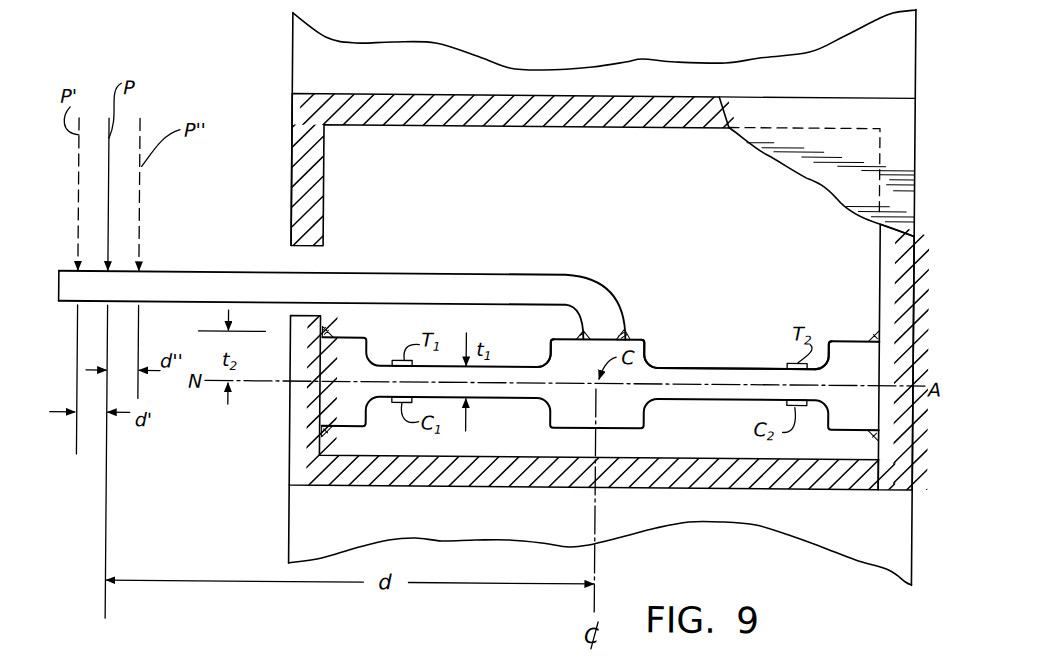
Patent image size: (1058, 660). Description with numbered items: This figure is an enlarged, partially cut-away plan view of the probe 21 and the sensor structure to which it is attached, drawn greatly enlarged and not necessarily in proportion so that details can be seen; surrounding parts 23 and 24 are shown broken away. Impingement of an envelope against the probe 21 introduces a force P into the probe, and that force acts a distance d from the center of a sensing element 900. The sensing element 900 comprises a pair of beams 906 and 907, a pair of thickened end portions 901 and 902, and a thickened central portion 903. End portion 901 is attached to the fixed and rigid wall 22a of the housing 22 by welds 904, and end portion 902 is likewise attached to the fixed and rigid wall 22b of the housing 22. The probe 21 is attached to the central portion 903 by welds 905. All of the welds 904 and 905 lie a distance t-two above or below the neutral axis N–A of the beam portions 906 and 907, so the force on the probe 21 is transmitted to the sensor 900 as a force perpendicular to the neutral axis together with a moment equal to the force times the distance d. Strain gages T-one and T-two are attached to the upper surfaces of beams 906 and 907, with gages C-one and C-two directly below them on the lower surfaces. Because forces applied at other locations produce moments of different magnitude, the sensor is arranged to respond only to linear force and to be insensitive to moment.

The probe 21 is at (58, 306).
The housing 22 is at (785, 137).
The fixed and rigid wall of housing 22a is at (291, 452).
The fixed and rigid wall of housing 22b is at (892, 242).
The upper body 23 is at (343, 51).
The lower body 24 is at (838, 535).
The sensing element 900 is at (679, 405).
The thickened end portion 901 is at (291, 422).
The thickened end portion 902 is at (835, 340).
The thickened central portion 903 is at (646, 340).
The welds 904 is at (328, 338).
The welds 905 is at (627, 336).
The beam 906 is at (538, 367).
The beam 907 is at (687, 363).